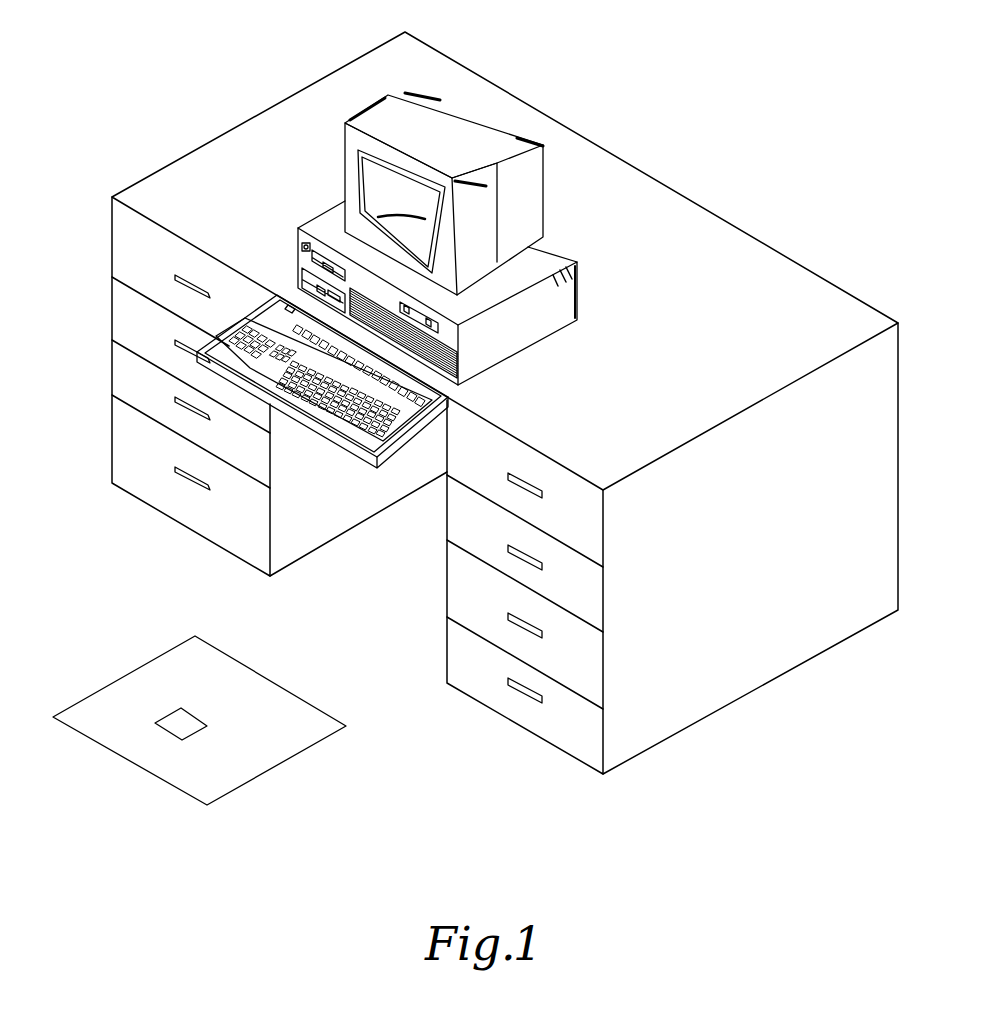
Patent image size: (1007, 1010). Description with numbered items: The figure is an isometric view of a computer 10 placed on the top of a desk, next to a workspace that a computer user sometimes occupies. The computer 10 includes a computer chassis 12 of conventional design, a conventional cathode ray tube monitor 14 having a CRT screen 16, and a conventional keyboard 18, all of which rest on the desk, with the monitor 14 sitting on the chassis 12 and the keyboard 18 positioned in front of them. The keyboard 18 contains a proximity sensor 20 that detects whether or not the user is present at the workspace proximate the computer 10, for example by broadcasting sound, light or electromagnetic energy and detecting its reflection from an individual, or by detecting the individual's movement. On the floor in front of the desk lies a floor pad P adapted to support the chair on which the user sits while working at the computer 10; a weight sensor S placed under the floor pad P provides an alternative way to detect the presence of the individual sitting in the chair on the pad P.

The computer 10 is at (364, 97).
The computer chassis 12 is at (535, 343).
The CRT monitor 14 is at (557, 203).
The CRT screen 16 is at (370, 180).
The keyboard 18 is at (372, 444).
The proximity sensor 20 is at (266, 368).
The floor pad P is at (265, 750).
The weight sensor S is at (173, 718).